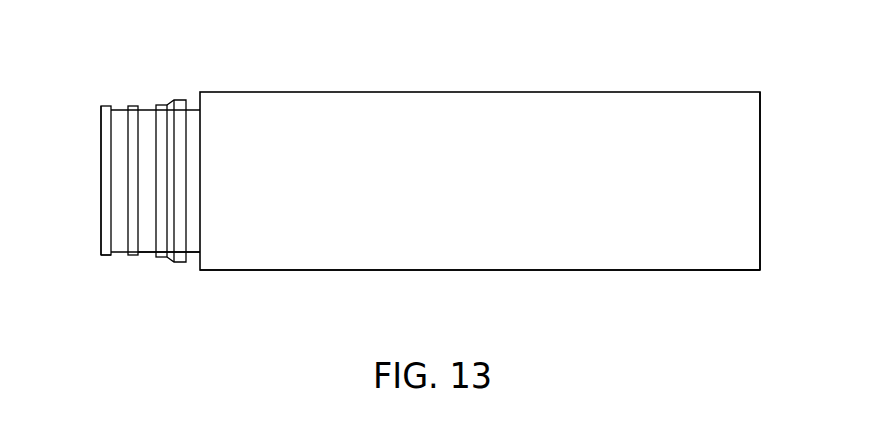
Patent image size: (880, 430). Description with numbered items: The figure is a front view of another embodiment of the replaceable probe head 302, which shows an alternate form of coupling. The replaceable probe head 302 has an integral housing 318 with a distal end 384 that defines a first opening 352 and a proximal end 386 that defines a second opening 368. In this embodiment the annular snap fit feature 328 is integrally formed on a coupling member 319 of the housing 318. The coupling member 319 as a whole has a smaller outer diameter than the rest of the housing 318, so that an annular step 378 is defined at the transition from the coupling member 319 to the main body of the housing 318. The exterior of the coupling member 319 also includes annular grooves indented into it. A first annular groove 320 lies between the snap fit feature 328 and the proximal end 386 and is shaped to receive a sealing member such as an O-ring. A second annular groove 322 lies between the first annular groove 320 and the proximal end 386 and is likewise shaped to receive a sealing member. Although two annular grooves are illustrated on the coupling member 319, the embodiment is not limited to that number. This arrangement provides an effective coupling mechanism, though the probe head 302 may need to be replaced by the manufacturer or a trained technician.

The replaceable probe head 302 is at (495, 72).
The first opening 352 is at (760, 138).
The integral housing 318 is at (548, 260).
The distal end 384 is at (715, 270).
The second annular groove 322 is at (118, 108).
The first annular groove 320 is at (148, 108).
The annular snap fit feature 328 is at (177, 99).
The annular step 378 is at (193, 99).
The second opening 368 is at (100, 232).
The proximal end 386 is at (108, 257).
The coupling member 319 is at (160, 270).